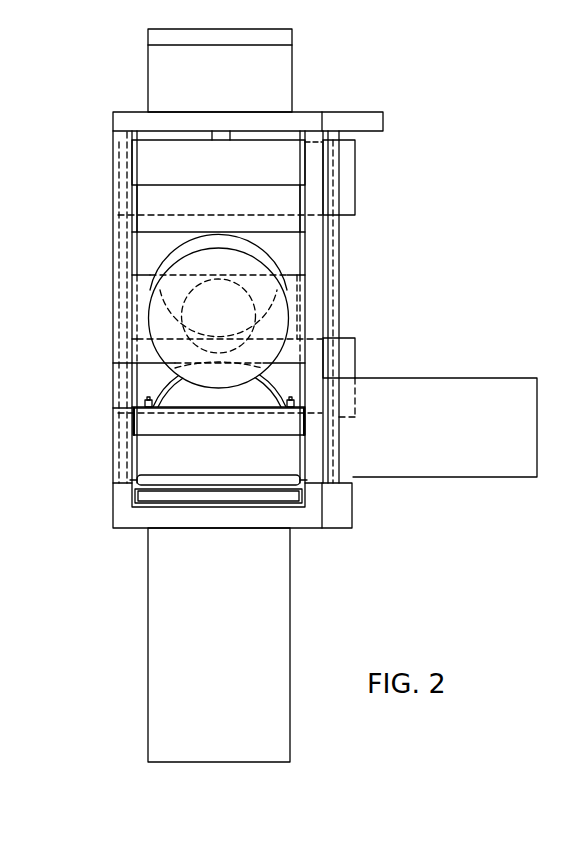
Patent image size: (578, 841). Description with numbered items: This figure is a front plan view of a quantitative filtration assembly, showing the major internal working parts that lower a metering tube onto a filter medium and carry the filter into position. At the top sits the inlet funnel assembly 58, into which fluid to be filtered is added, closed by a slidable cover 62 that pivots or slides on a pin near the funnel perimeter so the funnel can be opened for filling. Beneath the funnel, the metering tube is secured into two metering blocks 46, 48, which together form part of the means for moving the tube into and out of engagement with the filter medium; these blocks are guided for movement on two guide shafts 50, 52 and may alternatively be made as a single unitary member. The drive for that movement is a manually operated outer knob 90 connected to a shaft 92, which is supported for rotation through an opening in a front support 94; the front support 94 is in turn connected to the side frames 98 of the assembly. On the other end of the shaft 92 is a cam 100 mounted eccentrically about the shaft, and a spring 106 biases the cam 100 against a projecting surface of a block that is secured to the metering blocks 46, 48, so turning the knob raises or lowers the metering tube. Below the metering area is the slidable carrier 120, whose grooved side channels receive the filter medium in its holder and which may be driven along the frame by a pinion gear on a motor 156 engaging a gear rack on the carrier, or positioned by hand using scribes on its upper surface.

The metering block 46 is at (355, 350).
The metering block 48 is at (352, 190).
The guide shaft 50 is at (336, 316).
The guide shaft 52 is at (113, 230).
The inlet funnel assembly 58 is at (278, 87).
The slidable cover 62 is at (286, 35).
The outer knob 90 is at (290, 308).
The shaft 92 is at (186, 306).
The front support 94 is at (143, 290).
The side frames 98 is at (113, 410).
The cam 100 is at (273, 256).
The spring 106 is at (278, 387).
The slidable carrier 120 is at (152, 498).
The motor 156 is at (480, 463).